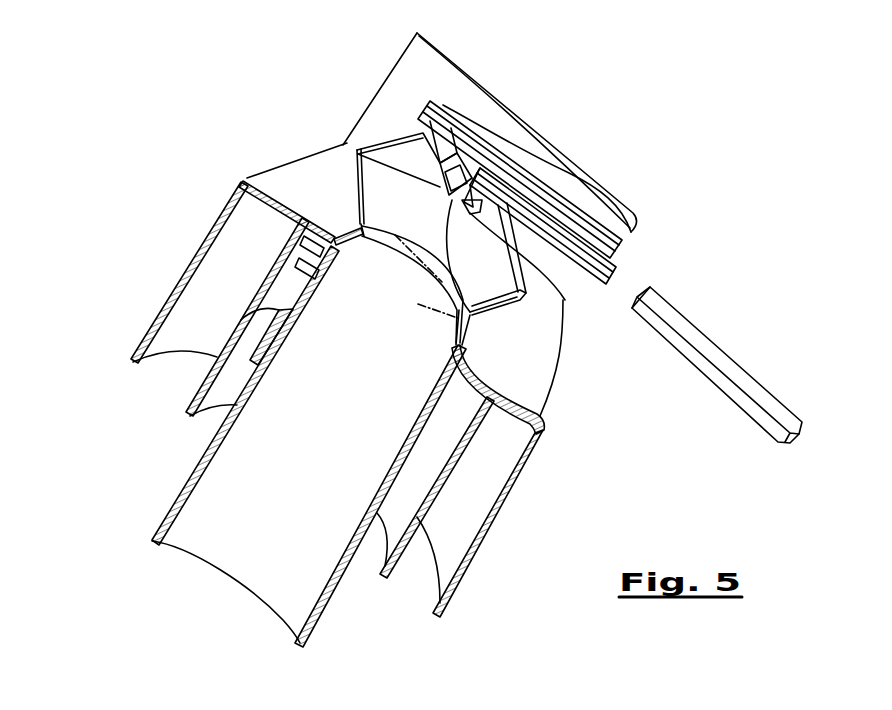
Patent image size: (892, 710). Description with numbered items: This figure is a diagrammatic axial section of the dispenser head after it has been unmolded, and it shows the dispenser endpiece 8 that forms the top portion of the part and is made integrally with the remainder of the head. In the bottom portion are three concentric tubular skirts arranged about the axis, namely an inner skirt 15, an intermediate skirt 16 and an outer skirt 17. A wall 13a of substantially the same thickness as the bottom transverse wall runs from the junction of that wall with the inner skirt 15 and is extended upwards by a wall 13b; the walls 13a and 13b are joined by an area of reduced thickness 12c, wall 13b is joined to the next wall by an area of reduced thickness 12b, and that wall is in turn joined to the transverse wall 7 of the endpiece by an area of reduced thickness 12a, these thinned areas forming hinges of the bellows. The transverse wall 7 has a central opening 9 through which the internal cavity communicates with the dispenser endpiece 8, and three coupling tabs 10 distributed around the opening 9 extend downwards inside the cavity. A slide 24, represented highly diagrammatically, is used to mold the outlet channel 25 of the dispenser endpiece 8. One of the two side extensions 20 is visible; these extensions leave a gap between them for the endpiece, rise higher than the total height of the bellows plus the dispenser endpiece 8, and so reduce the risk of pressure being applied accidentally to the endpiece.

The transverse wall 7 is at (457, 138).
The dispenser endpiece 8 is at (513, 147).
The central opening 9 is at (442, 270).
The coupling tabs 10 is at (446, 194).
The area of reduced thickness 12a is at (565, 300).
The area of reduced thickness 12b is at (356, 150).
The area of reduced thickness 12c is at (362, 245).
The wall 13a is at (386, 136).
The wall 13b is at (487, 312).
The inner skirt 15 is at (178, 492).
The intermediate skirt 16 is at (190, 388).
The outer skirt 17 is at (175, 278).
The side extensions 20 is at (522, 114).
The slide 24 is at (712, 382).
The outlet channel 25 is at (623, 272).